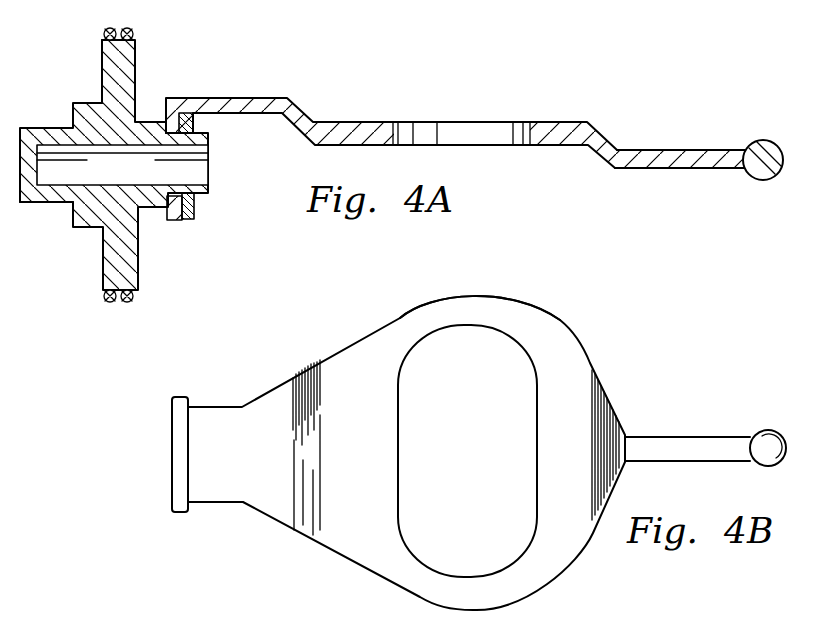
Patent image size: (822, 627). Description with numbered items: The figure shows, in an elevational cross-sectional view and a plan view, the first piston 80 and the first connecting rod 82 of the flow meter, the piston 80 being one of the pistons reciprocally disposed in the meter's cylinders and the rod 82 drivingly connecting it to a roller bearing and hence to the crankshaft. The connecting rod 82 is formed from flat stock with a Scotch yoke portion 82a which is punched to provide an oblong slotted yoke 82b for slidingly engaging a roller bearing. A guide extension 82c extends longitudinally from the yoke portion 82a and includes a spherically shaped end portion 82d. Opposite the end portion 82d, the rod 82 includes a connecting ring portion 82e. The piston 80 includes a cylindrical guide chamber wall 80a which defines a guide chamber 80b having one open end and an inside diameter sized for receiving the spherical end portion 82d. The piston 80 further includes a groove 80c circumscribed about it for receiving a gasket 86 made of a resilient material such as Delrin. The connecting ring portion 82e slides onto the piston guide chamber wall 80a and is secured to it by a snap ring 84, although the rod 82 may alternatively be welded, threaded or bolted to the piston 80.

In FIG. 4A, the first piston 80 is at (92, 103).
In FIG. 4A, the cylindrical guide chamber wall 80a is at (47, 200).
In FIG. 4A, the guide chamber 80b is at (138, 175).
In FIG. 4A, the groove 80c is at (102, 53).
In FIG. 4A, the first connecting rod 82 is at (262, 96).
In FIG. 4B, the first connecting rod 82 is at (264, 385).
In FIG. 4B, the Scotch yoke portion 82a is at (481, 297).
In FIG. 4A, the oblong slotted yoke 82b is at (398, 120).
In FIG. 4B, the oblong slotted yoke 82b is at (420, 340).
In FIG. 4A, the guide extension 82c is at (668, 152).
In FIG. 4B, the guide extension 82c is at (675, 437).
In FIG. 4A, the spherically shaped end portion 82d is at (760, 142).
In FIG. 4B, the spherically shaped end portion 82d is at (766, 440).
In FIG. 4A, the connecting ring portion 82e is at (183, 222).
In FIG. 4A, the snap ring 84 is at (197, 210).
In FIG. 4A, the gasket 86 is at (103, 30).